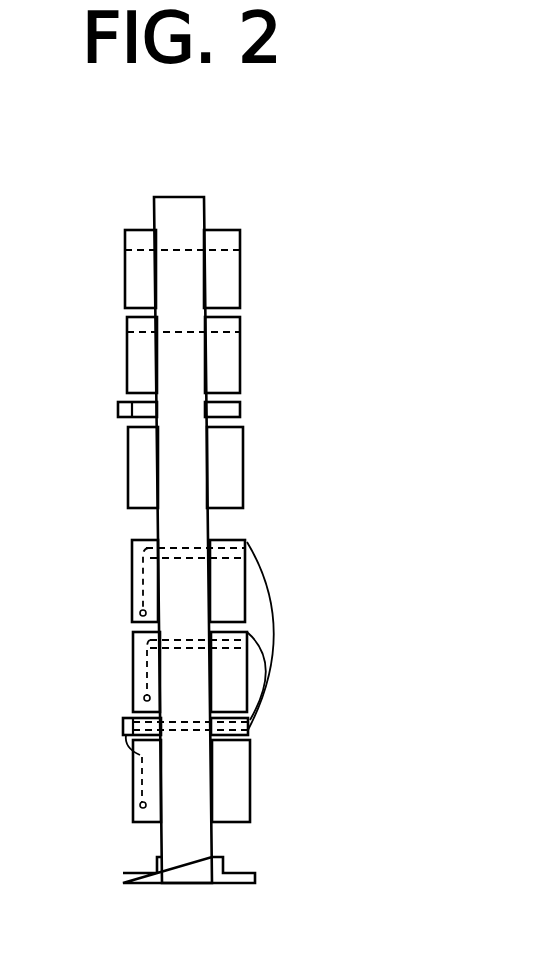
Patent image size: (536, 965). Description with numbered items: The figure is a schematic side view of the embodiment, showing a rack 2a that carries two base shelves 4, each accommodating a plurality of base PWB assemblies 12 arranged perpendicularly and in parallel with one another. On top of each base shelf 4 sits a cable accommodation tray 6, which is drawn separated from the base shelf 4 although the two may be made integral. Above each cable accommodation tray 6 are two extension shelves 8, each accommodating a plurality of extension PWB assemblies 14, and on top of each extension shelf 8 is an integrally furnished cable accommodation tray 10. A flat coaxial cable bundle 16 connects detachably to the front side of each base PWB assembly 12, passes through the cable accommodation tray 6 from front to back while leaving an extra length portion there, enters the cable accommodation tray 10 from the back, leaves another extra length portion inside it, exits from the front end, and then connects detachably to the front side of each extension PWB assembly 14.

The rack 2a is at (172, 205).
The base shelf 4 is at (238, 463).
The cable accommodation tray 6 is at (234, 410).
The extension shelf 8 is at (233, 277).
The cable accommodation tray 10 is at (233, 233).
The base PWB assembly 12 is at (145, 782).
The extension PWB assembly 14 is at (143, 583).
The flat coaxial cable bundle 16 is at (277, 590).